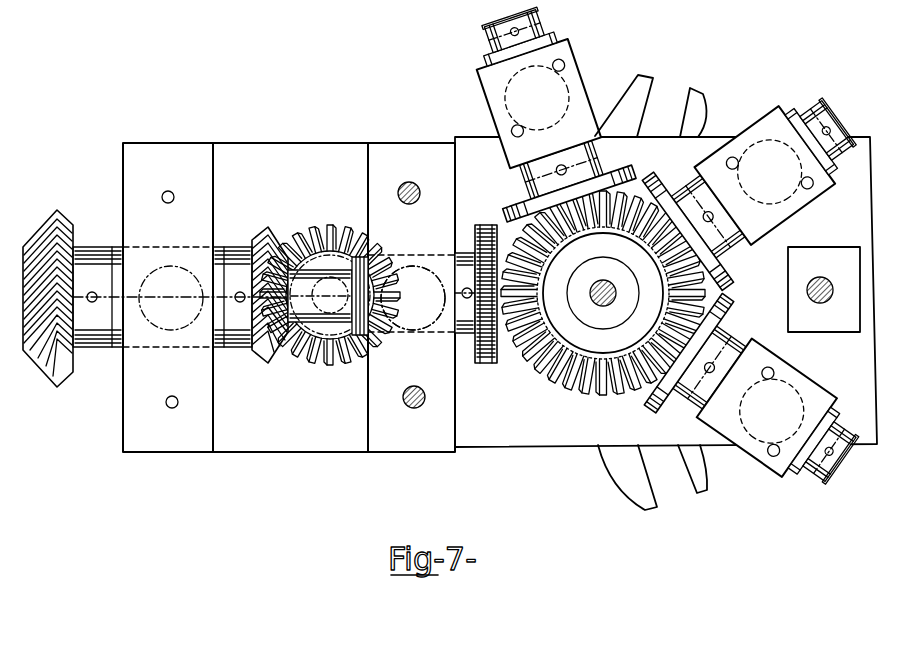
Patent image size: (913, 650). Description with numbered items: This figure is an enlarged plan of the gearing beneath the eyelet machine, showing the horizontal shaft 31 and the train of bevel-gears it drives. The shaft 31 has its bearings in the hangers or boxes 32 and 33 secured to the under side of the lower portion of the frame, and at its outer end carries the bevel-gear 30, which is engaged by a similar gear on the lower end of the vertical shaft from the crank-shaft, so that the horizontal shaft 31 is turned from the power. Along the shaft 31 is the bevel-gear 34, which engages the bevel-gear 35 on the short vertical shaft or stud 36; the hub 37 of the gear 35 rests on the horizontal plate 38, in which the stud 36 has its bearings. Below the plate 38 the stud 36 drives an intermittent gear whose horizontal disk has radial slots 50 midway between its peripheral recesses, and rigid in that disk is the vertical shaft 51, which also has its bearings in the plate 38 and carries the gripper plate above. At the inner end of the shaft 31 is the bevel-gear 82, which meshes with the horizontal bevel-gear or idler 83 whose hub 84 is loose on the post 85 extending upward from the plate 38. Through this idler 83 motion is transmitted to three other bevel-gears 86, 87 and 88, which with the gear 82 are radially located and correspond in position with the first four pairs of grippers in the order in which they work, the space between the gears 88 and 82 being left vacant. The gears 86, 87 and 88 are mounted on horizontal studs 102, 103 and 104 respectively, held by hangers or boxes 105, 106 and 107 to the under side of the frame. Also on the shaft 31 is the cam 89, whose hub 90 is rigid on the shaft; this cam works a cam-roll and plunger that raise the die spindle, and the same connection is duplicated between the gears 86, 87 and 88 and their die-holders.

The bevel-gear 30 is at (70, 386).
The horizontal shaft 31 is at (318, 352).
The hanger or box 32 is at (216, 404).
The hanger or box 33 is at (373, 395).
The bevel-gear 34 is at (256, 356).
The bevel-gear 35 is at (334, 372).
The short vertical shaft or stud 36 is at (330, 296).
The hub 37 is at (352, 272).
The horizontal plate 38 is at (500, 452).
The radial slot 50 is at (661, 526).
The vertical shaft 51 is at (603, 287).
The bevel-gear 82 is at (497, 348).
The horizontal bevel-gear or idler 83 is at (590, 318).
The hub 84 is at (603, 311).
The post 85 is at (536, 378).
The bevel-gear 86 is at (512, 214).
The bevel-gear 87 is at (704, 226).
The bevel-gear 88 is at (655, 392).
The cam 89 is at (478, 238).
The hub 90 is at (472, 334).
The horizontal stud 102 is at (538, 26).
The horizontal stud 103 is at (830, 120).
The horizontal stud 104 is at (862, 447).
The hanger or box 105 is at (582, 60).
The hanger or box 106 is at (804, 213).
The hanger or box 107 is at (808, 373).